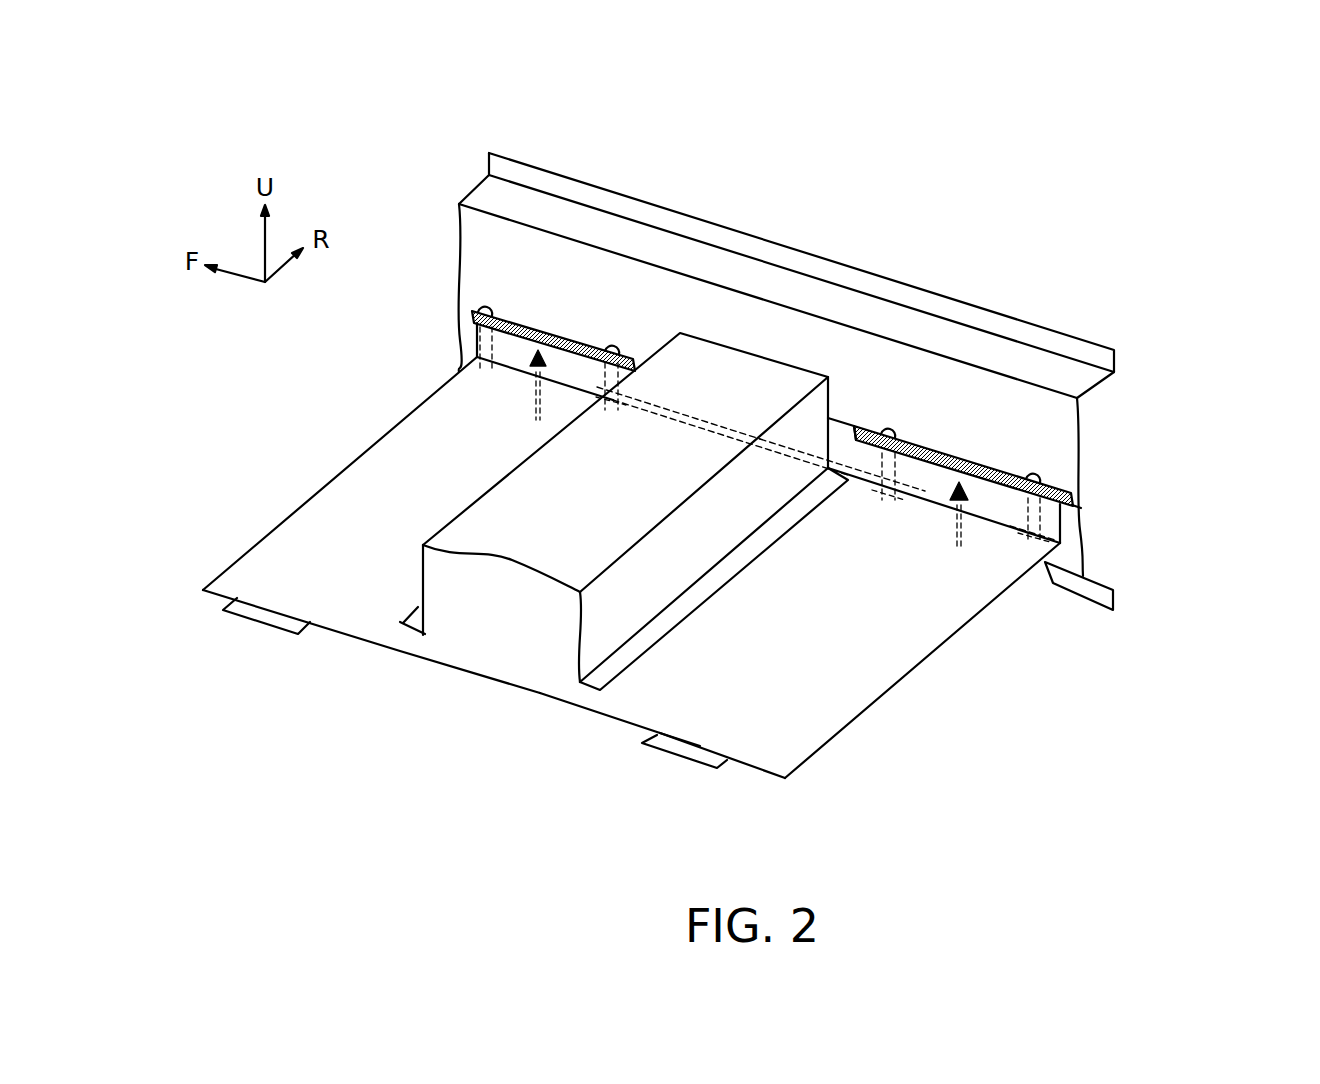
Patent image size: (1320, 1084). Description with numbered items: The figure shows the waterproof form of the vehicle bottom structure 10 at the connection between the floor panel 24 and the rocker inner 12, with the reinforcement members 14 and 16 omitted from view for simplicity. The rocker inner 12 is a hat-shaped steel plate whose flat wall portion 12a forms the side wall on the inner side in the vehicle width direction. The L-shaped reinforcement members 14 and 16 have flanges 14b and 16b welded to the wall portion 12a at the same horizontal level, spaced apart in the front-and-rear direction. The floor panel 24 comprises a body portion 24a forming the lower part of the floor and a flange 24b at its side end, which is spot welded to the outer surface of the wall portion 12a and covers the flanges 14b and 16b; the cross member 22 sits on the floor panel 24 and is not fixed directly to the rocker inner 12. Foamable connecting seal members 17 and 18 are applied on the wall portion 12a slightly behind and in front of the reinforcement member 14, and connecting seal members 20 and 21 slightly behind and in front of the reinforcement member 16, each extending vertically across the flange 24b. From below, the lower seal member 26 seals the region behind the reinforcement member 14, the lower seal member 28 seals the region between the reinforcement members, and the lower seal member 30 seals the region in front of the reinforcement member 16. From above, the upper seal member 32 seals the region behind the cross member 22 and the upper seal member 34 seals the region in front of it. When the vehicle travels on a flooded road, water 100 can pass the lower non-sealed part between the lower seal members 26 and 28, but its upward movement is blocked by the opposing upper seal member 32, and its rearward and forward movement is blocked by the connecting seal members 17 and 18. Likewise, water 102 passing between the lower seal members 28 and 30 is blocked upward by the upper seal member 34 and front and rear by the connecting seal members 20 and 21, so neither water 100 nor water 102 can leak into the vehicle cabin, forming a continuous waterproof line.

The vehicle bottom structure 10 is at (1006, 102).
The rocker inner 12 is at (786, 381).
The wall portion 12a is at (1023, 454).
The reinforcement member 14 is at (800, 658).
The flange 14b is at (989, 487).
The reinforcement member 16 is at (397, 535).
The flange 16b is at (566, 329).
The connecting seal member 17 is at (1116, 477).
The connecting seal member 18 is at (912, 322).
The connecting seal member 20 is at (645, 248).
The connecting seal member 21 is at (435, 285).
The cross member 22 is at (603, 556).
The floor panel 24 is at (489, 750).
The body portion 24a is at (610, 762).
The flange 24b is at (1137, 519).
The lower seal member 26 is at (1030, 487).
The lower seal member 28 is at (741, 298).
The lower seal member 30 is at (498, 358).
The upper seal member 32 is at (963, 367).
The upper seal member 34 is at (553, 249).
The water 100 is at (1028, 578).
The water 102 is at (438, 382).